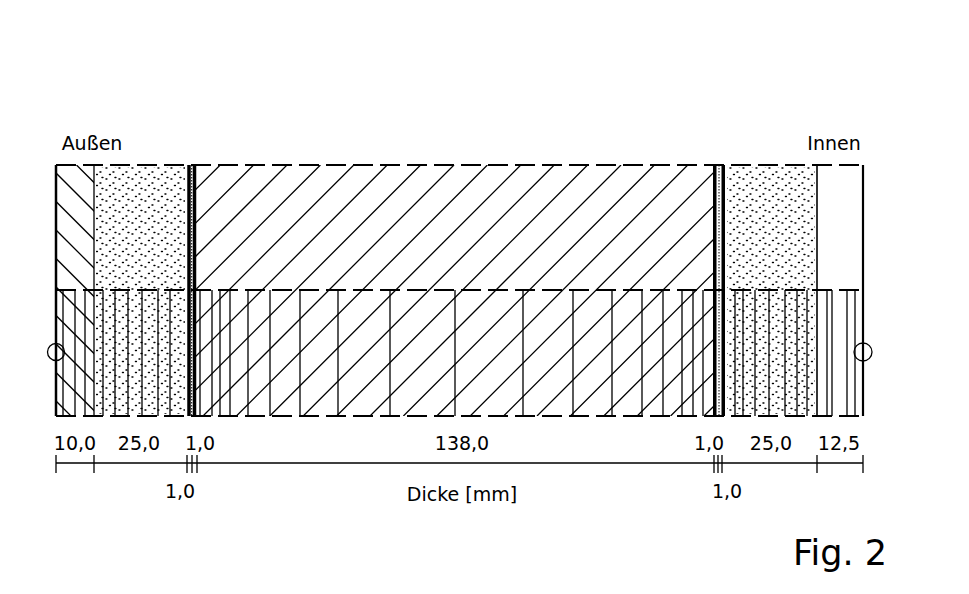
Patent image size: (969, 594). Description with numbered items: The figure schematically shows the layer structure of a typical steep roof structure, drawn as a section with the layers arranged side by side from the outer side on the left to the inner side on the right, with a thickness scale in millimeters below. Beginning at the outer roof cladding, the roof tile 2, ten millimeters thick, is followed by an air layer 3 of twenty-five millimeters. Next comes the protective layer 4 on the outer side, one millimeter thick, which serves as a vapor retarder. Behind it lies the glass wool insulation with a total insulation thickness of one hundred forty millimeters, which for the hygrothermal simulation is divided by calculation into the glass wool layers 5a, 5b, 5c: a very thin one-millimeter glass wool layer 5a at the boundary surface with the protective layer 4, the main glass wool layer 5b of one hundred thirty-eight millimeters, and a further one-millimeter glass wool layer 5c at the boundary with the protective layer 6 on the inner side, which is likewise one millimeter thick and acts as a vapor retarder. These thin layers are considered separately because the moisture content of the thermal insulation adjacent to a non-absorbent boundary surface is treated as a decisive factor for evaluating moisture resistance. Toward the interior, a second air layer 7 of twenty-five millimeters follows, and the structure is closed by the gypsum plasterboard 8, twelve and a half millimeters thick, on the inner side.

The roof tile 2 is at (53, 165).
The air layer 3 is at (146, 176).
The protective layer, outer side 4 is at (187, 167).
The glass wool layer 5a is at (210, 170).
The glass wool layer 5b is at (432, 183).
The glass wool layer 5c is at (711, 176).
The protective layer, inner side 6 is at (725, 168).
The air layer 7 is at (763, 176).
The gypsum plasterboard 8 is at (862, 168).